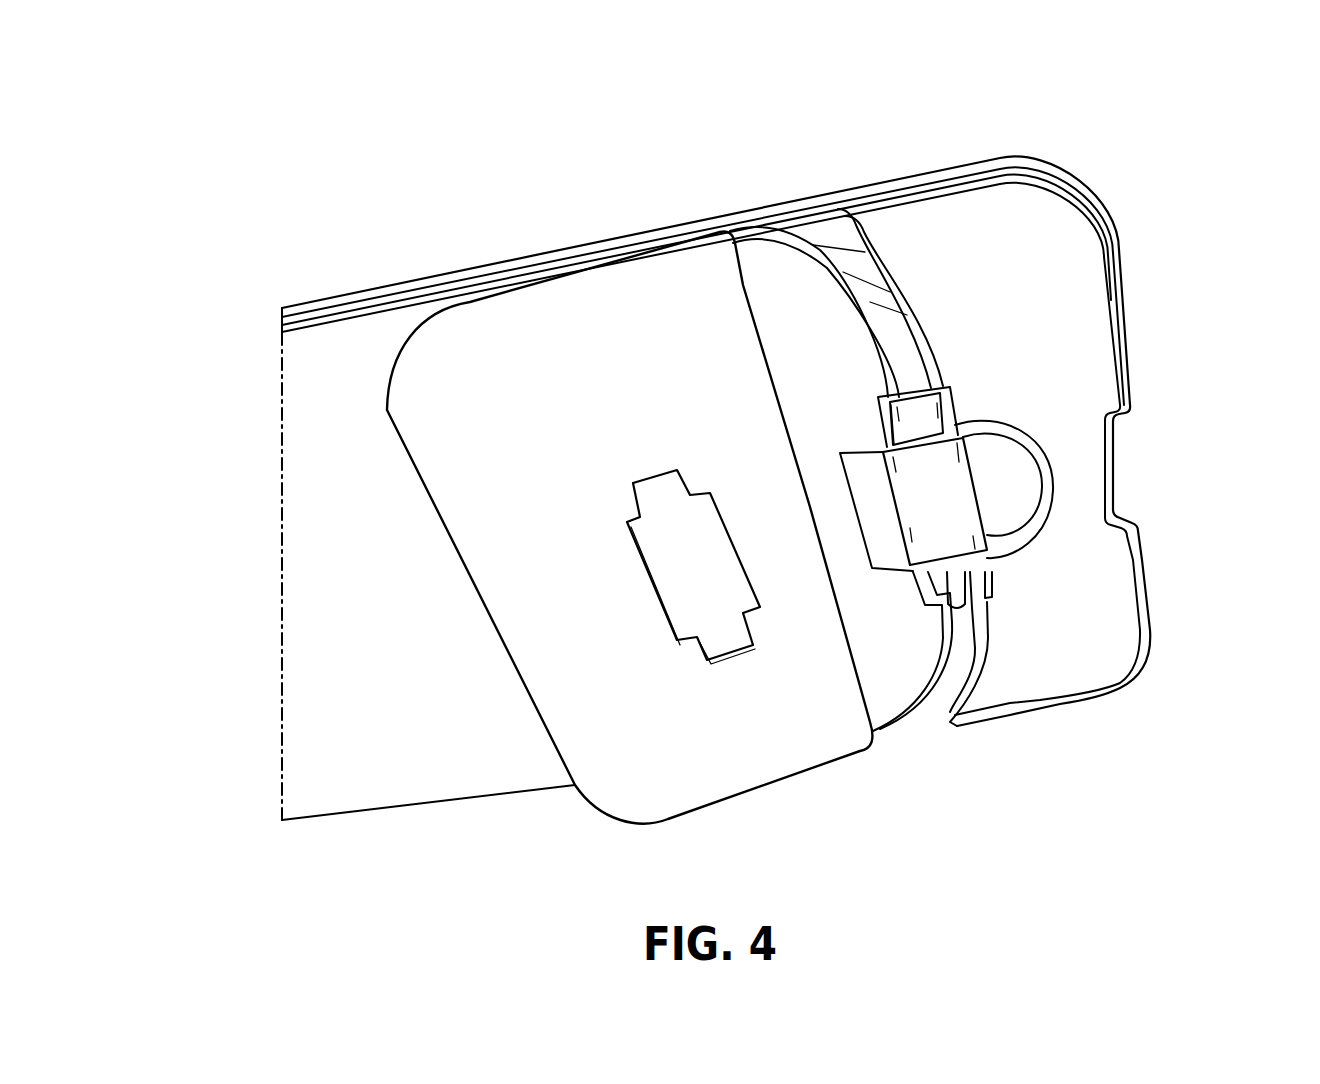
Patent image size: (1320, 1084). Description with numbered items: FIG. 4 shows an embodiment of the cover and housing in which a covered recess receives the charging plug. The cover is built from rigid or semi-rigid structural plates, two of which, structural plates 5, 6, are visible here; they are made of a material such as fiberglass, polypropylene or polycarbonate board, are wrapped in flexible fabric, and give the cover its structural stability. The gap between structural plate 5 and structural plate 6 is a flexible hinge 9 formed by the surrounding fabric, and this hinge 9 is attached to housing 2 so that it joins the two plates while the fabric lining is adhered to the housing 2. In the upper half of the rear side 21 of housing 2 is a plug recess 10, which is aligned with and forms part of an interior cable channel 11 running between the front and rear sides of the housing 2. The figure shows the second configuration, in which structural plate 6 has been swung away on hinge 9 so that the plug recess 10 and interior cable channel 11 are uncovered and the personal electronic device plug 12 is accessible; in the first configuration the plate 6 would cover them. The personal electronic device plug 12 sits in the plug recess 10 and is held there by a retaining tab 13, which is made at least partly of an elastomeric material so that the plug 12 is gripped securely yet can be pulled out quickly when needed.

The housing 2 is at (1067, 590).
The structural plate 5 is at (347, 670).
The structural plate 6 is at (798, 745).
The hinge 9 is at (737, 260).
The plug recess 10 is at (1007, 477).
The interior cable channel 11 is at (827, 230).
The personal electronic device plug 12 is at (953, 475).
The retaining tab 13 is at (892, 565).
The rear side 21 is at (1090, 643).